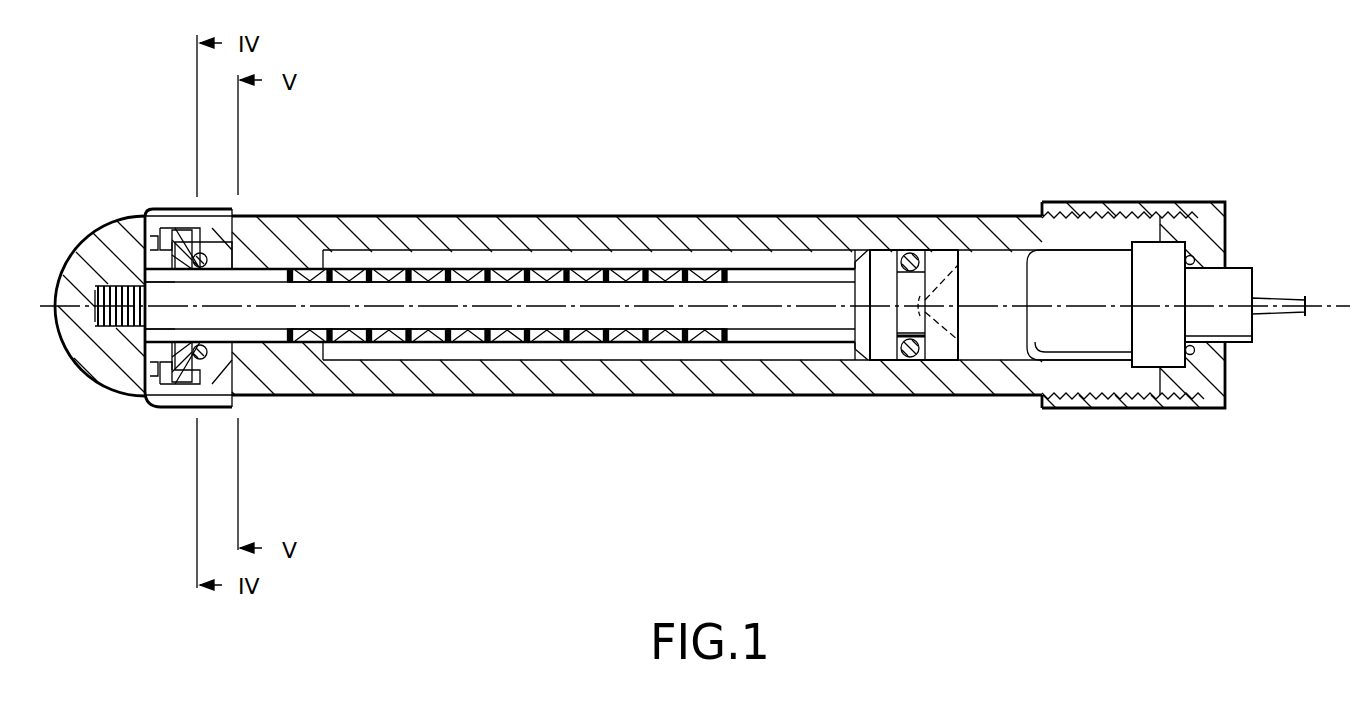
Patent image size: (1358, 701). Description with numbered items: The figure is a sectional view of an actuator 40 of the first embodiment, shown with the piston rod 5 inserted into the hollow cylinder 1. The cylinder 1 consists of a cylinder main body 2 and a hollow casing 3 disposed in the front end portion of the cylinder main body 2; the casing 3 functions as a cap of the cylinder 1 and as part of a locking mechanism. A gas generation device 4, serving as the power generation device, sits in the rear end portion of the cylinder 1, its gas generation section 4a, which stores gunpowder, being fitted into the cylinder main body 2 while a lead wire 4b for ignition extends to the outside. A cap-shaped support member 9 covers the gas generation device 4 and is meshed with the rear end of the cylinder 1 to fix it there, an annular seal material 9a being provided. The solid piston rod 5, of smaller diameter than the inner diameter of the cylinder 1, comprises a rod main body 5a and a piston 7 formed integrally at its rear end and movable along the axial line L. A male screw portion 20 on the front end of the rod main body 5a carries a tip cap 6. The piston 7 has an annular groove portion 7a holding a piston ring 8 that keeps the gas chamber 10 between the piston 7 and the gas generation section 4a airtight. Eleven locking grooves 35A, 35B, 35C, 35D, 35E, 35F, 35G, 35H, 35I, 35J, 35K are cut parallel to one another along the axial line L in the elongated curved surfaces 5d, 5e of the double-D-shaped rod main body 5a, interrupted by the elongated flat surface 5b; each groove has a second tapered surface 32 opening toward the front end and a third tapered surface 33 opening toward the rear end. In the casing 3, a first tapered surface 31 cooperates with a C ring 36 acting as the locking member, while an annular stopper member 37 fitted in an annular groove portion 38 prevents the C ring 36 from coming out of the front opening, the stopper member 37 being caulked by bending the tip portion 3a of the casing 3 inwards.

The hollow cylinder 1 is at (604, 214).
The cylinder main body 2 is at (758, 380).
The casing 3 is at (235, 215).
The tip portion of the casing 3a is at (148, 223).
The gas generation device 4 is at (1240, 344).
The gas generation section 4a is at (1090, 346).
The lead wire 4b is at (1274, 297).
The piston rod 5 is at (549, 344).
The rod main body 5a is at (418, 292).
The elongated flat surface 5b is at (793, 315).
The elongated curved surface 5d is at (160, 282).
The elongated curved surface 5e is at (160, 340).
The tip cap 6 is at (112, 372).
The piston 7 is at (882, 352).
The annular groove portion 7a is at (910, 358).
The piston ring 8 is at (910, 252).
The support member 9 is at (1190, 203).
The annular seal material 9a is at (1190, 358).
The gas chamber 10 is at (990, 346).
The male screw portion 20 is at (122, 306).
The first tapered surface 31 is at (168, 225).
The second tapered surface 32 is at (627, 272).
The third tapered surface 33 is at (438, 272).
The locking groove 35A is at (318, 272).
The locking groove 35B is at (318, 344).
The locking groove 35C is at (368, 272).
The locking groove 35D is at (410, 344).
The locking groove 35E is at (472, 272).
The locking groove 35F is at (495, 344).
The locking groove 35G is at (560, 272).
The locking groove 35H is at (575, 344).
The locking groove 35I is at (662, 272).
The locking groove 35J is at (655, 344).
The locking groove 35K is at (750, 272).
The C ring 36 is at (268, 235).
The stopper member 37 is at (192, 262).
The annular groove portion 38 is at (180, 232).
The actuator 40 is at (833, 176).
The axial line L is at (1328, 300).